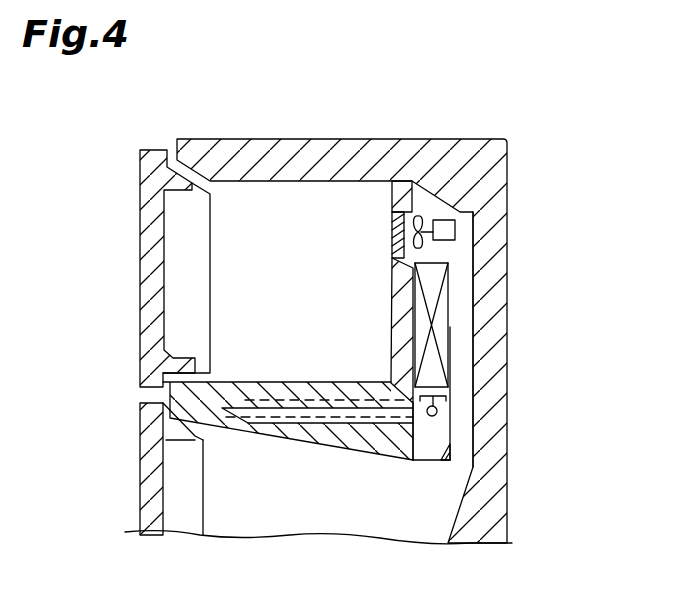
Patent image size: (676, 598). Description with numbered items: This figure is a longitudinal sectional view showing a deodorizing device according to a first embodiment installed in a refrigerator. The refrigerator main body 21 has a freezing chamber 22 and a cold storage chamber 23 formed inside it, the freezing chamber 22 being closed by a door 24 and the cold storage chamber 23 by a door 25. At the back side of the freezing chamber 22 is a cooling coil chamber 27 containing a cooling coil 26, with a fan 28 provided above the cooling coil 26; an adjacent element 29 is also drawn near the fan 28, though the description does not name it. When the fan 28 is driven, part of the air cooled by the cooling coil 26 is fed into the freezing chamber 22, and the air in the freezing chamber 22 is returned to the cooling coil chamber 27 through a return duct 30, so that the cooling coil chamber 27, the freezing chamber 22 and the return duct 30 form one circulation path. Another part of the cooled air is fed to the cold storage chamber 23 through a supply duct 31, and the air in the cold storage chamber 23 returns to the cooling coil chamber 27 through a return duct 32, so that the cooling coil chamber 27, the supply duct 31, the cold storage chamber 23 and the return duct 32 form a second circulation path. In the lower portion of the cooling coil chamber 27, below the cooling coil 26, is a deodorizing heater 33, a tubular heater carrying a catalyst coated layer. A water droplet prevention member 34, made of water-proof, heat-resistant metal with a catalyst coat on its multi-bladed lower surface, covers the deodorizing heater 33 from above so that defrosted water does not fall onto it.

The refrigerator main body 21 is at (508, 158).
The freezing chamber 22 is at (243, 238).
The cold storage chamber 23 is at (230, 484).
The door 24 is at (140, 248).
The door 25 is at (140, 447).
The cooling coil 26 is at (443, 311).
The cooling coil chamber 27 is at (450, 328).
The fan 28 is at (427, 209).
The air vent 29 is at (388, 226).
The return duct 30 is at (258, 382).
The supply duct 31 is at (465, 280).
The return duct 32 is at (167, 383).
The deodorizing heater 33 is at (437, 412).
The water droplet prevention member 34 is at (448, 397).